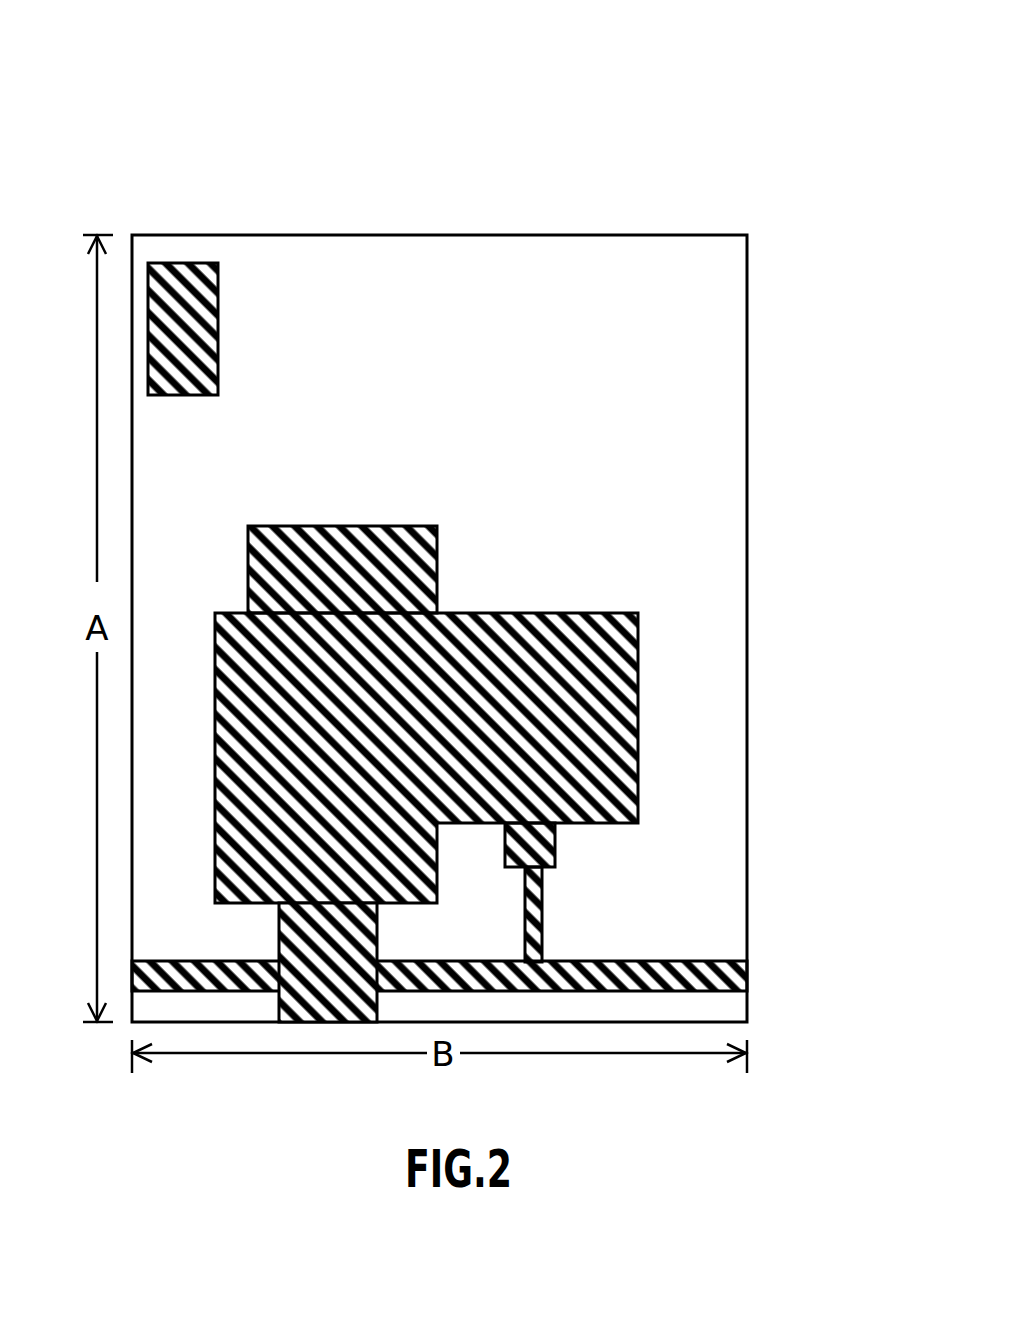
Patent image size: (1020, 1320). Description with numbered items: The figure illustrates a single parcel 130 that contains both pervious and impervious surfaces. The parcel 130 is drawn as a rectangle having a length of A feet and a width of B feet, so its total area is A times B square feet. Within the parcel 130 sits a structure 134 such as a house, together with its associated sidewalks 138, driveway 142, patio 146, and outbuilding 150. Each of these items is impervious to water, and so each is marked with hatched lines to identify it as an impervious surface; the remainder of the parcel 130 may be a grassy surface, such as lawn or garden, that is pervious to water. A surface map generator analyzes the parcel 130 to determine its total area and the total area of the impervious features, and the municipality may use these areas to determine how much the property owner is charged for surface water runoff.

The parcel 130 is at (630, 190).
The structure 134 is at (498, 612).
The sidewalks 138 is at (542, 912).
The driveway 142 is at (278, 928).
The patio 146 is at (345, 525).
The outbuilding 150 is at (218, 325).